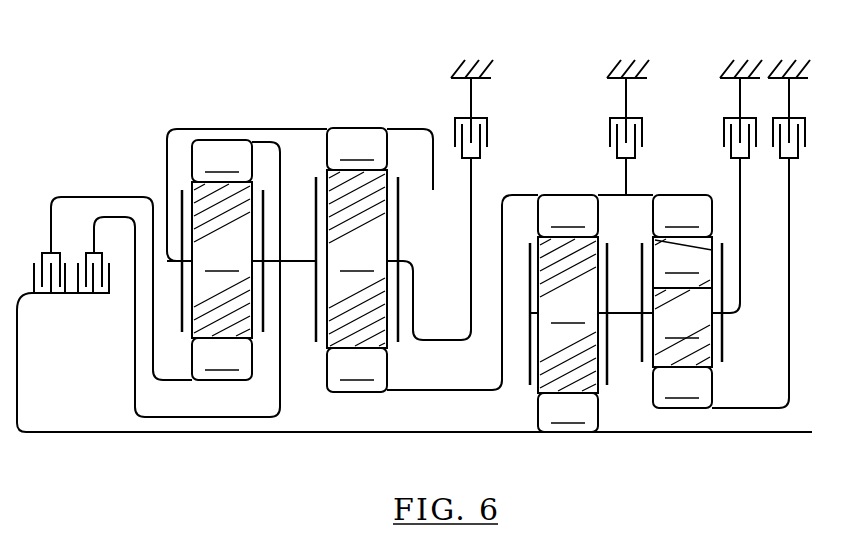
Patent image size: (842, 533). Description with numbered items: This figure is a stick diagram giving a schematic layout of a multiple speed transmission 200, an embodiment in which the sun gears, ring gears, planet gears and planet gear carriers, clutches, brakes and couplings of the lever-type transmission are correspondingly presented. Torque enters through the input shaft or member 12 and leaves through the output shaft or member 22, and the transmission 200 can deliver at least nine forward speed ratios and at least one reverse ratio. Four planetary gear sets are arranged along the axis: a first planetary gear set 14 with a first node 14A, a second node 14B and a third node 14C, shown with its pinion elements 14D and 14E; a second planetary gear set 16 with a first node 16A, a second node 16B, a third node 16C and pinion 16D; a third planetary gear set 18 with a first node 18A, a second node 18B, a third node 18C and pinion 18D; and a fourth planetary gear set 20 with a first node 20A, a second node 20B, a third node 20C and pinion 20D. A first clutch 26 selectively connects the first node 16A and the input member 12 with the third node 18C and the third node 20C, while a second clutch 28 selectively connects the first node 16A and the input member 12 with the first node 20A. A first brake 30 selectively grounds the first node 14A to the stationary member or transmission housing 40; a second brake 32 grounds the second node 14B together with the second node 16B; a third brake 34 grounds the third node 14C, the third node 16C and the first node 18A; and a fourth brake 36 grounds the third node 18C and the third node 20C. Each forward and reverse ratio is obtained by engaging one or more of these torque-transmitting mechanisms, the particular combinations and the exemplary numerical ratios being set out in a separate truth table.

The multiple speed transmission 200 is at (187, 70).
The input shaft or member 12 is at (748, 434).
The first planetary gear set 14 is at (675, 415).
The first node of the first planetary gear set 14A is at (682, 387).
The second node of the first planetary gear set 14B is at (725, 333).
The third node of the first planetary gear set 14C is at (682, 216).
The first pinion gear 14D is at (682, 262).
The second pinion gear 14E is at (682, 327).
The second planetary gear set 16 is at (577, 440).
The first node of the second planetary gear set 16A is at (568, 412).
The second node of the second planetary gear set 16B is at (528, 346).
The third node of the second planetary gear set 16C is at (595, 216).
The pinion gear 16D is at (591, 315).
The third planetary gear set 18 is at (355, 400).
The first node of the third planetary gear set 18A is at (357, 370).
The second node of the third planetary gear set 18B is at (277, 194).
The third node of the third planetary gear set 18C is at (313, 328).
The pinion gear 18D is at (399, 253).
The fourth planetary gear set 20 is at (217, 400).
The first node of the fourth planetary gear set 20A is at (222, 359).
The second node of the fourth planetary gear set 20B is at (182, 316).
The third node of the fourth planetary gear set 20C is at (222, 161).
The pinion gear 20D is at (241, 260).
The output shaft or member 22 is at (400, 128).
The first clutch 26 is at (111, 273).
The second clutch 28 is at (33, 271).
The first brake 30 is at (804, 147).
The second brake 32 is at (723, 131).
The third brake 34 is at (610, 131).
The fourth brake 36 is at (487, 131).
The stationary member or transmission housing 40 is at (609, 68).